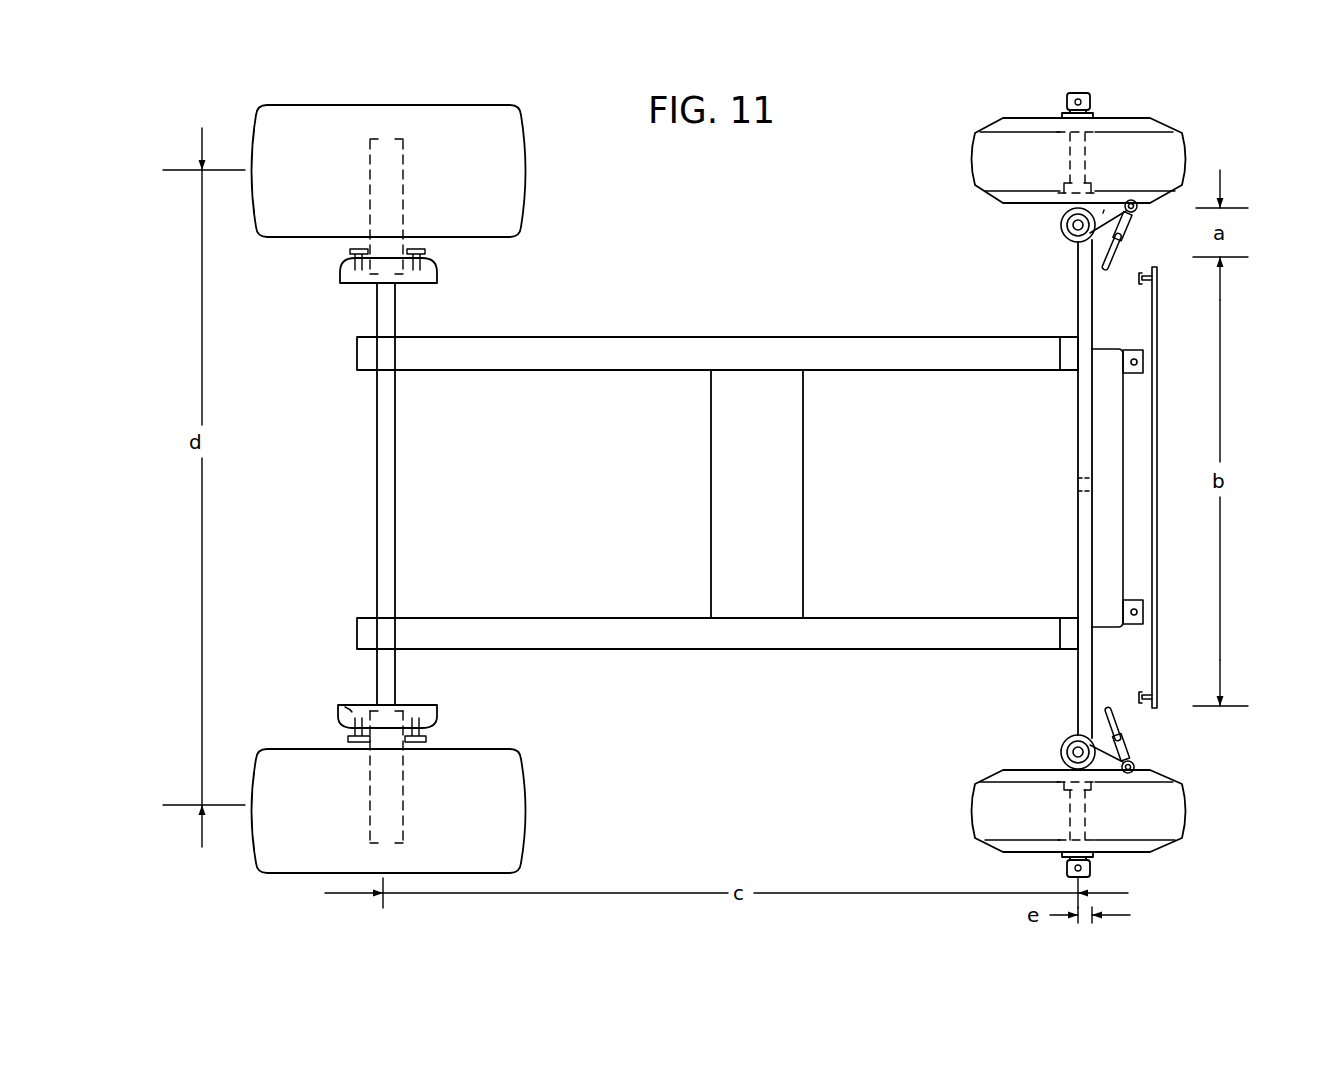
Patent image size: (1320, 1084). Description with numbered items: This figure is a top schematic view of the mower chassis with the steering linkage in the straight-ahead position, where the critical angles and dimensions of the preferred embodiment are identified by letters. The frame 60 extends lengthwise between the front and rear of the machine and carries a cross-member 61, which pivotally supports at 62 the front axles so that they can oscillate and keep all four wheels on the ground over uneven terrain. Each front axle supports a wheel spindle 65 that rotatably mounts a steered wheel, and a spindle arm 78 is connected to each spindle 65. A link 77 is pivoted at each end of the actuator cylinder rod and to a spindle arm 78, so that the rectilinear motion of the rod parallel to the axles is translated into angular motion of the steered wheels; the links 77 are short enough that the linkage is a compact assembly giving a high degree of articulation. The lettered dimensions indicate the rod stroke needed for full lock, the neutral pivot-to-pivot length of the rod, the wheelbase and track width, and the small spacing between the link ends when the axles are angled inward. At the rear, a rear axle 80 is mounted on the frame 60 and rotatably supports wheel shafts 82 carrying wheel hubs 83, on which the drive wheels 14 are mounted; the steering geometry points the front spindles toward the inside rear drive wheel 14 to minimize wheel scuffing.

The drive wheel 14 is at (331, 183).
The frame 60 is at (826, 650).
The cross-member 61 is at (1076, 568).
The pivot 62 is at (1078, 486).
The wheel spindle 65 is at (1072, 232).
The link 77 is at (1132, 222).
The spindle arm 78 is at (1103, 213).
The rear axle 80 is at (396, 513).
The wheel shaft 82 is at (388, 245).
The wheel hub 83 is at (349, 710).